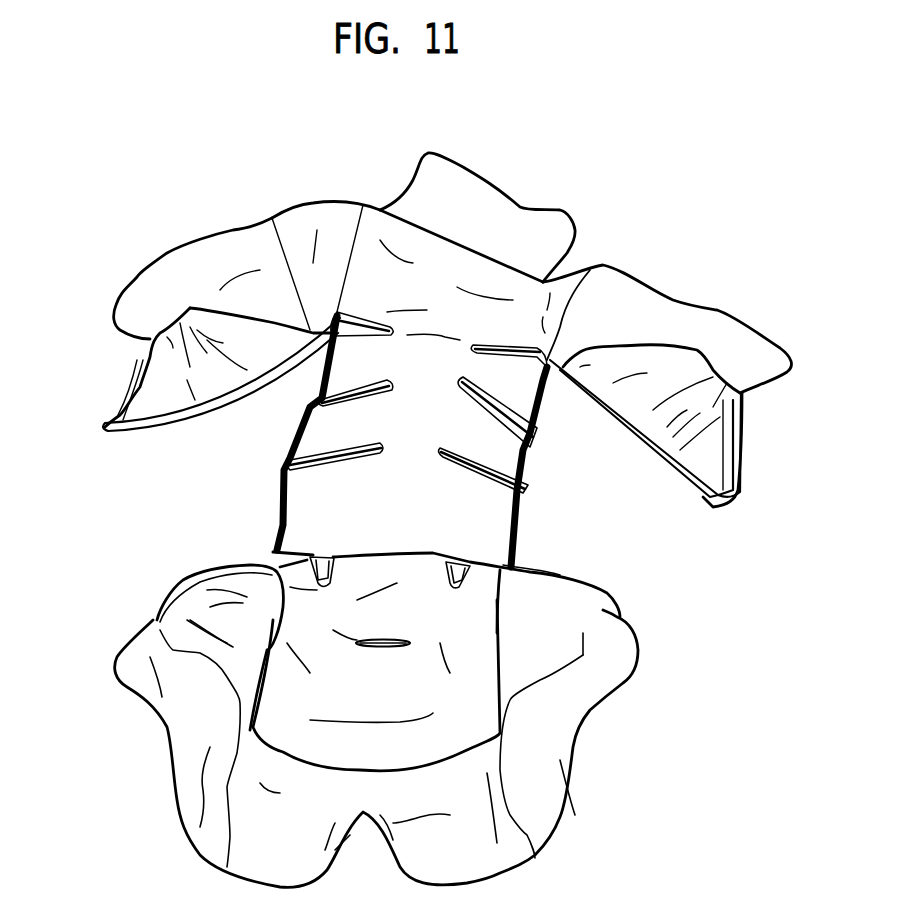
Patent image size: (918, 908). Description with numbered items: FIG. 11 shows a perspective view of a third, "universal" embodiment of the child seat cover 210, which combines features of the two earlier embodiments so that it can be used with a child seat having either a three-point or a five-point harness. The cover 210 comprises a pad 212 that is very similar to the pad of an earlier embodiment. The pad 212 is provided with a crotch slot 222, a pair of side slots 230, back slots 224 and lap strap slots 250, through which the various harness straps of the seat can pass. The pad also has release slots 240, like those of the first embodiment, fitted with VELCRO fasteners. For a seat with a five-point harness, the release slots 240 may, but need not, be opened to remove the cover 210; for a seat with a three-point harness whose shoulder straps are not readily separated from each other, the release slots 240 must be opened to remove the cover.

The seat cover 210 is at (604, 207).
The pad 212 is at (331, 213).
The crotch slot 222 is at (398, 640).
The back slots 224 is at (363, 320).
The side slots 230 is at (232, 402).
The release slots 240 is at (110, 393).
The lap strap slots 250 is at (323, 557).